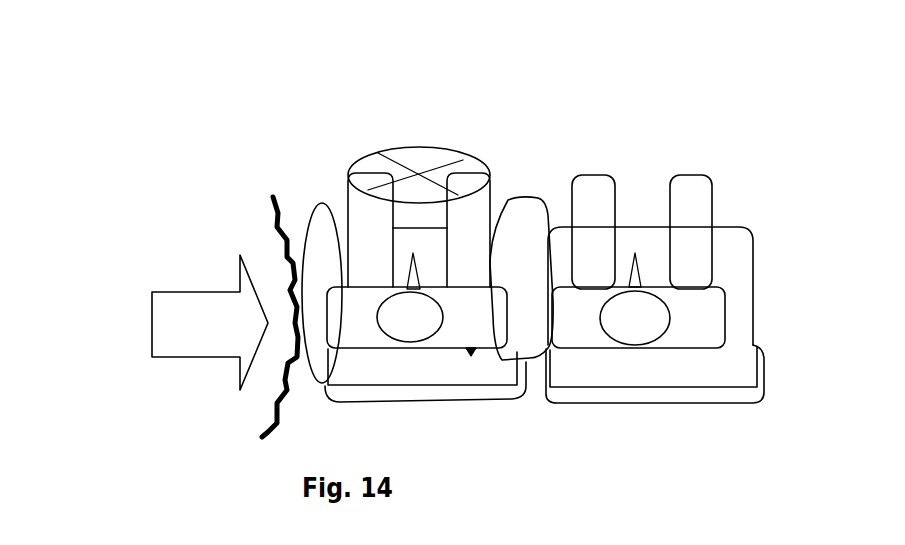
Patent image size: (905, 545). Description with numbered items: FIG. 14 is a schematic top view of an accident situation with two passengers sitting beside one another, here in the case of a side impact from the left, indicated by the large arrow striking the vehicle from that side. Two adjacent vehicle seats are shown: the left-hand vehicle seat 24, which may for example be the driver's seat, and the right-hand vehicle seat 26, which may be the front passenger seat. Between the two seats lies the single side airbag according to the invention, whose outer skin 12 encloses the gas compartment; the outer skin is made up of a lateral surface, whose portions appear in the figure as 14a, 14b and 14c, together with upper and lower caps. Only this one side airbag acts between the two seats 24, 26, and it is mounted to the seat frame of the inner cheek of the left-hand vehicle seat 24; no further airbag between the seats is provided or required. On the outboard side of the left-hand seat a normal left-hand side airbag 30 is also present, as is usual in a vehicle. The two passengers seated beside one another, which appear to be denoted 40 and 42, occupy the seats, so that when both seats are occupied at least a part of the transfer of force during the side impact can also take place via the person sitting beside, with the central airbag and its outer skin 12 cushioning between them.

The outer skin 12 is at (527, 332).
The first fastening module 14a is at (507, 300).
The second fastening module 14b is at (553, 285).
The end module 14c is at (525, 200).
The left-hand vehicle seat 24 is at (427, 233).
The right-hand vehicle seat 26 is at (737, 255).
The left-hand side airbag 30 is at (312, 265).
The first connecting bar 40 is at (362, 330).
The second connecting bar 42 is at (693, 323).